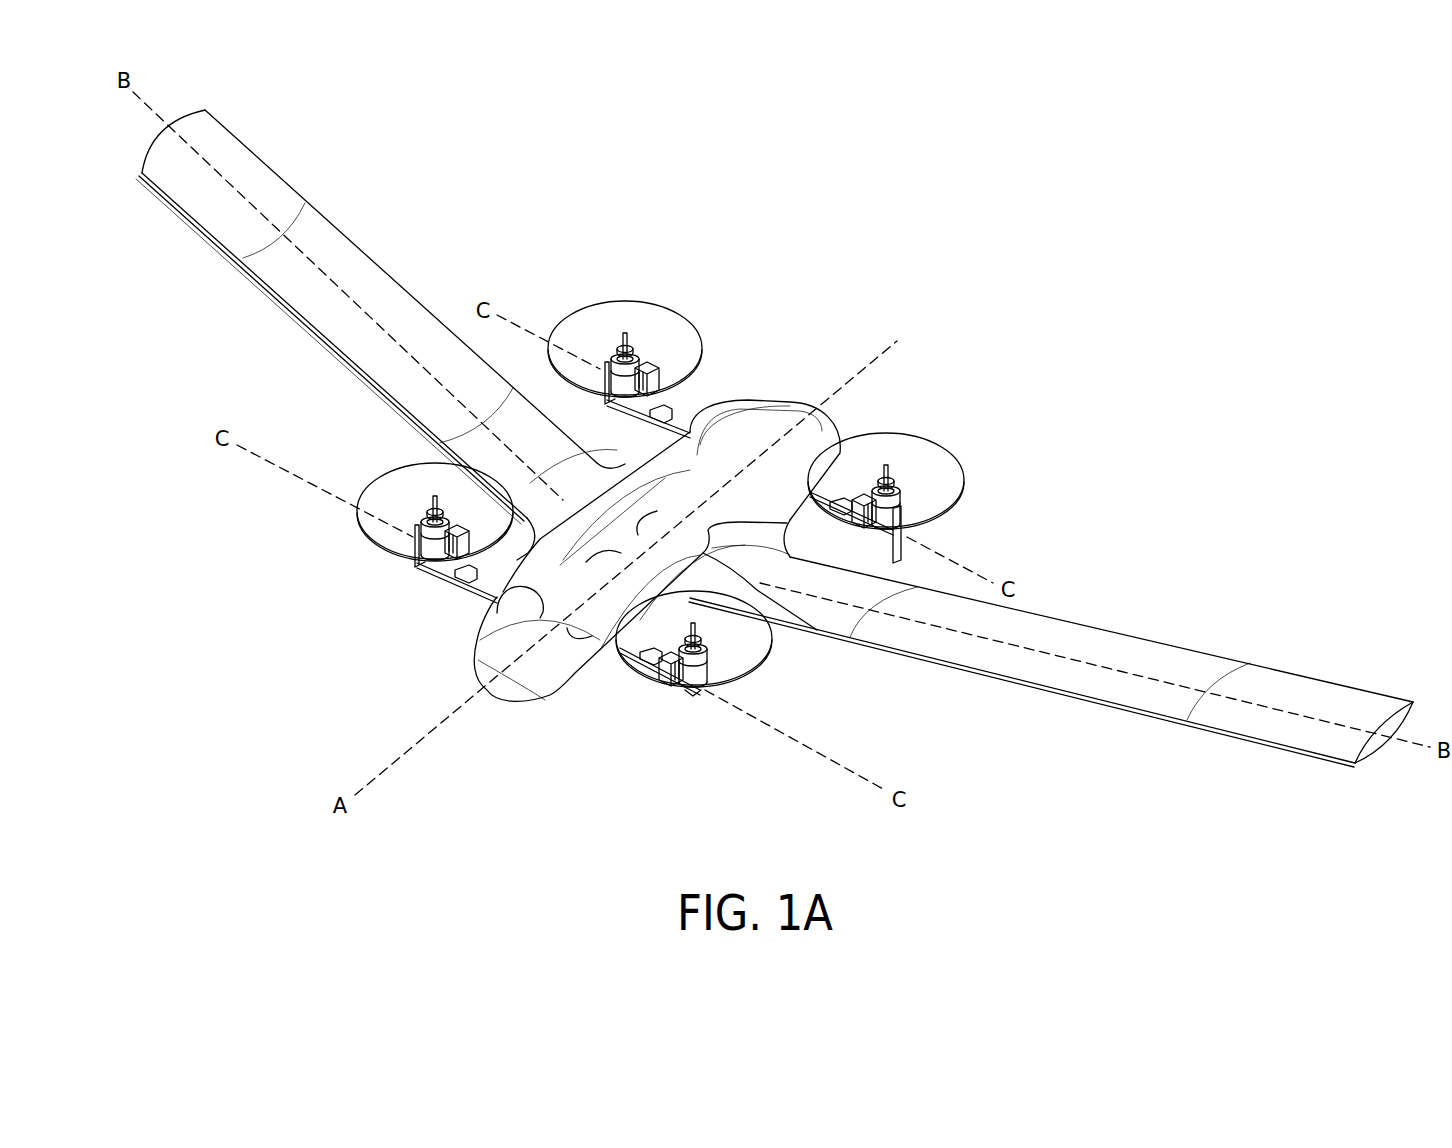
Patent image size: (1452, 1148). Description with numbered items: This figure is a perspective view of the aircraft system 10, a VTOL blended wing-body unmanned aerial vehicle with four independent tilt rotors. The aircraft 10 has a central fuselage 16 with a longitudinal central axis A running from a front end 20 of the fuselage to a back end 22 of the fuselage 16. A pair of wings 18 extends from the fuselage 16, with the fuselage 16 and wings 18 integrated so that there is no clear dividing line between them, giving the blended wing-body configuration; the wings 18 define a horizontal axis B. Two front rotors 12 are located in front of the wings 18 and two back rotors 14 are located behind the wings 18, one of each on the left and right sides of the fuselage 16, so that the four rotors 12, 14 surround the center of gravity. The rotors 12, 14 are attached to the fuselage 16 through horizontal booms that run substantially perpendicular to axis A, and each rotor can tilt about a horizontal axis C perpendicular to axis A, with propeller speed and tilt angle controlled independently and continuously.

The aircraft system 10 is at (1013, 256).
The front rotors 12 is at (428, 540).
The back rotors 14 is at (617, 368).
The central fuselage 16 is at (817, 630).
The wings 18 is at (345, 263).
The front end 20 is at (495, 606).
The back end 22 is at (703, 418).